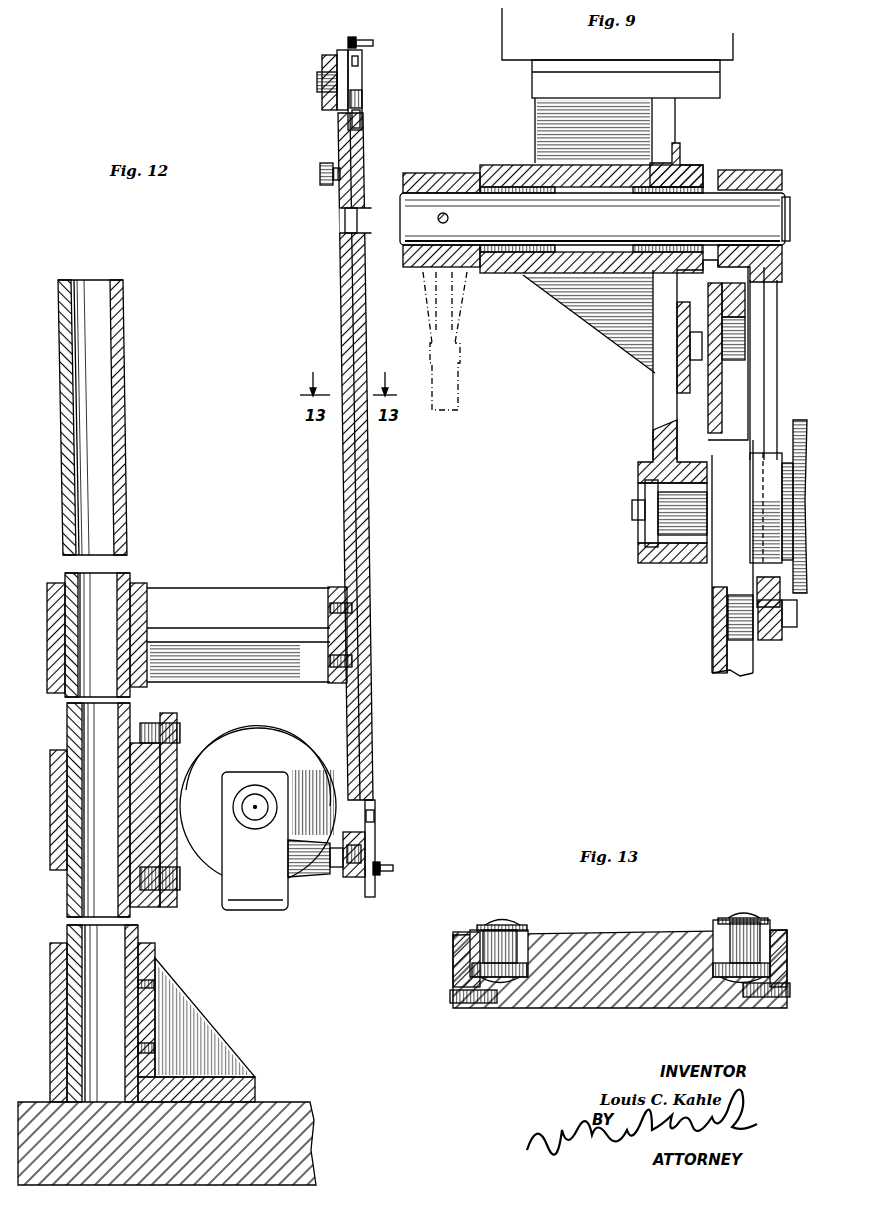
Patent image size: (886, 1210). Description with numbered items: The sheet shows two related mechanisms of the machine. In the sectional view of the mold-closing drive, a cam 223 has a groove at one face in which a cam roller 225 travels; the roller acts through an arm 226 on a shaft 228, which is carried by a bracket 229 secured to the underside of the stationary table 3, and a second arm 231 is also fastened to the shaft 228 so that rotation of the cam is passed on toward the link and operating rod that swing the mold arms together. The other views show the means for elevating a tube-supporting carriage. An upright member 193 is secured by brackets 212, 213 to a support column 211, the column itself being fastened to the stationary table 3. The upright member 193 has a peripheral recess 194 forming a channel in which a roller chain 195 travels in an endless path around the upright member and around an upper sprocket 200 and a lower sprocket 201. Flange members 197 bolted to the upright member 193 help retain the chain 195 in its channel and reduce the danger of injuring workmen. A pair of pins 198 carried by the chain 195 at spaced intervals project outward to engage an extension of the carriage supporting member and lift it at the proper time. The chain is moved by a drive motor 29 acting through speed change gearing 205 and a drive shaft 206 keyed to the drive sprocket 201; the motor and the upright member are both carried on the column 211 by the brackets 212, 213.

In FIG. 12, the stationary table 3 is at (293, 1103).
In FIG. 9, the stationary table 3 is at (733, 37).
In FIG. 12, the drive motor 29 is at (212, 877).
In FIG. 12, the upright member 193 is at (343, 466).
In FIG. 13, the upright member 193 is at (598, 1000).
In FIG. 13, the peripheral recess 194 is at (527, 970).
In FIG. 13, the roller chain 195 is at (493, 917).
In FIG. 13, the flange members 197 is at (455, 952).
In FIG. 12, the pins 198 is at (380, 873).
In FIG. 12, the upper sprocket 200 is at (362, 82).
In FIG. 12, the lower sprocket 201 is at (375, 817).
In FIG. 12, the speed change gearing 205 is at (253, 910).
In FIG. 12, the drive shaft 206 is at (340, 867).
In FIG. 12, the support column 211 is at (120, 423).
In FIG. 12, the bracket 212 is at (207, 588).
In FIG. 12, the bracket 213 is at (185, 753).
In FIG. 9, the cam 223 is at (720, 628).
In FIG. 9, the cam roller 225 is at (728, 607).
In FIG. 9, the arm 226 is at (763, 390).
In FIG. 9, the shaft 228 is at (463, 197).
In FIG. 9, the bracket 229 is at (665, 127).
In FIG. 9, the arm 231 is at (417, 262).